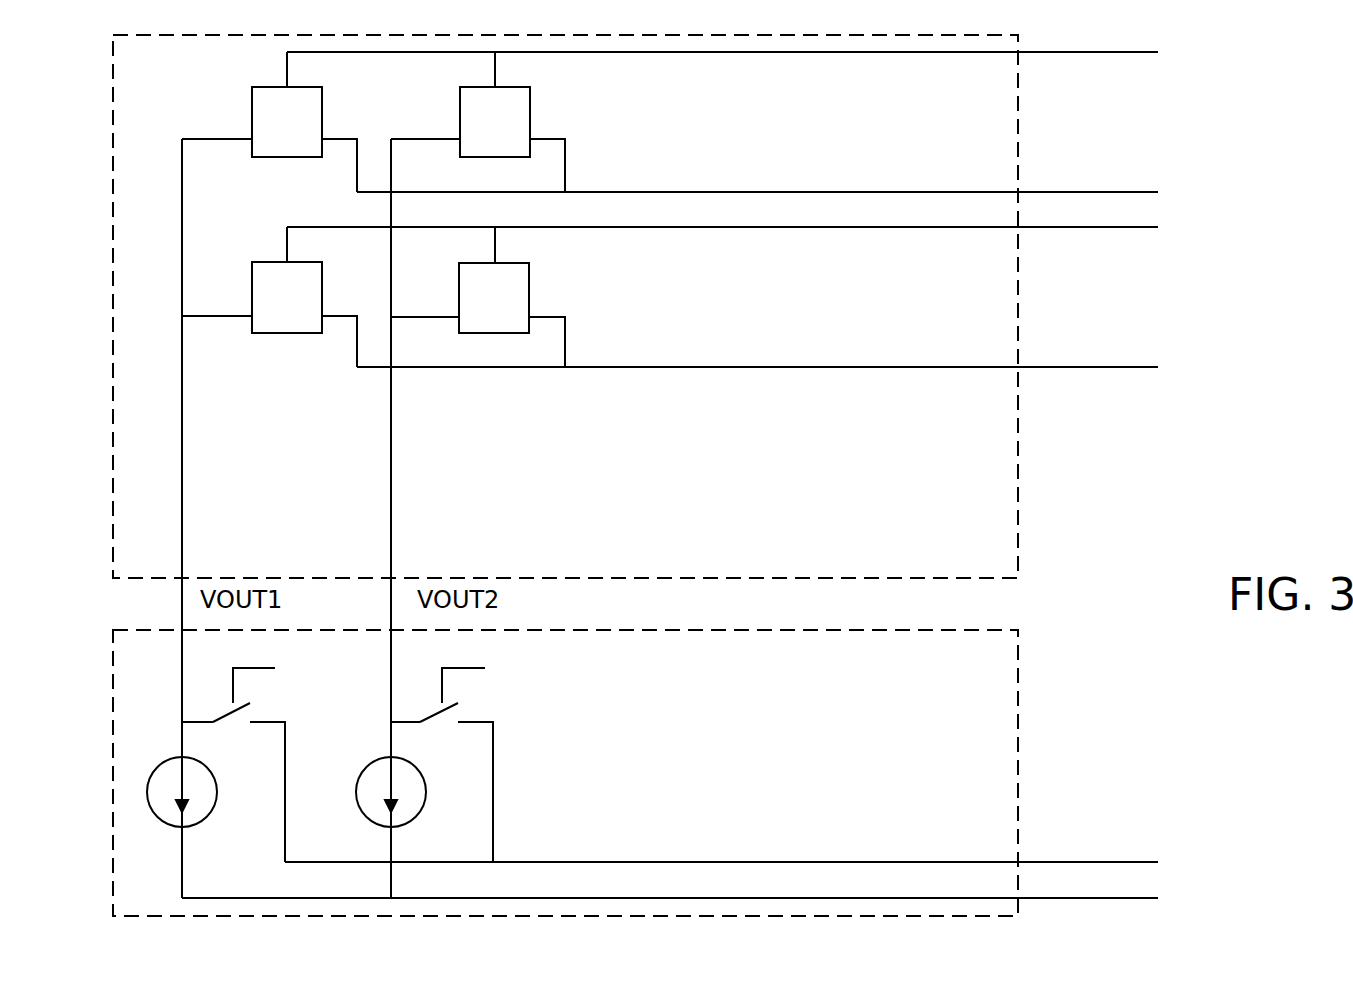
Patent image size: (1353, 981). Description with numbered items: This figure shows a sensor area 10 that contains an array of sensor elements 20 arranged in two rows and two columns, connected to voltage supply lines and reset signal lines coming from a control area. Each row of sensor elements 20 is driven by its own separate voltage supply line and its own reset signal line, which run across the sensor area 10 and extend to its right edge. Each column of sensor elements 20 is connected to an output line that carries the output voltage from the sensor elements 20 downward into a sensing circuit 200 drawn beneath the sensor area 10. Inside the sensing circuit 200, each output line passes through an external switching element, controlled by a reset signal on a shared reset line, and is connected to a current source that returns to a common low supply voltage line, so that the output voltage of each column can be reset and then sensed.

The sensor area 10 is at (1018, 474).
The sensor element 20 is at (322, 118).
The sensing circuit 200 is at (1018, 699).